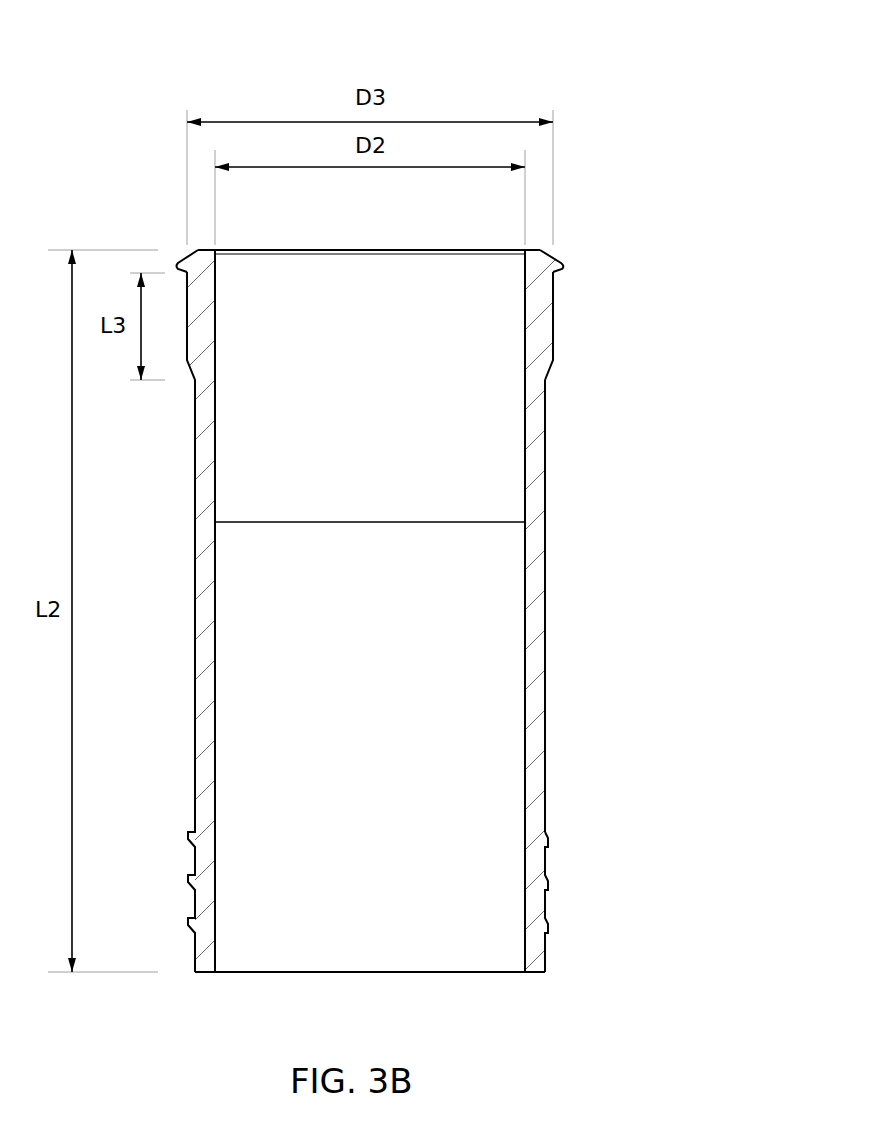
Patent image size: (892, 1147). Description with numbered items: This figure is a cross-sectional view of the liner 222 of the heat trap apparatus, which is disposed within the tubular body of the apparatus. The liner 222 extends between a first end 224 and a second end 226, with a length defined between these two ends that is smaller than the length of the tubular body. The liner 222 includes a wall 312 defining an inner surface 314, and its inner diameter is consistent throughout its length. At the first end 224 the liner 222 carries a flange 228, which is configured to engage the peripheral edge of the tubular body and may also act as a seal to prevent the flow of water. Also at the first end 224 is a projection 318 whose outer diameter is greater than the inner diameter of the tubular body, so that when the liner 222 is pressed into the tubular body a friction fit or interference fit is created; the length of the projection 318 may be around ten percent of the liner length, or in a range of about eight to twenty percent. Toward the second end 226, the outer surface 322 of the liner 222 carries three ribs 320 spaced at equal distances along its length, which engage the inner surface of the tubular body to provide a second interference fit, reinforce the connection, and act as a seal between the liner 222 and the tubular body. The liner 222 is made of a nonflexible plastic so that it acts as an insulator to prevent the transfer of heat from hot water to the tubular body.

The liner 222 is at (441, 522).
The first end 224 is at (558, 244).
The second end 226 is at (548, 978).
The flange 228 is at (560, 275).
The wall 312 is at (532, 460).
The inner surface 314 is at (215, 300).
The projection 318 is at (553, 333).
The ribs 320 is at (545, 836).
The outer surface 322 is at (545, 692).